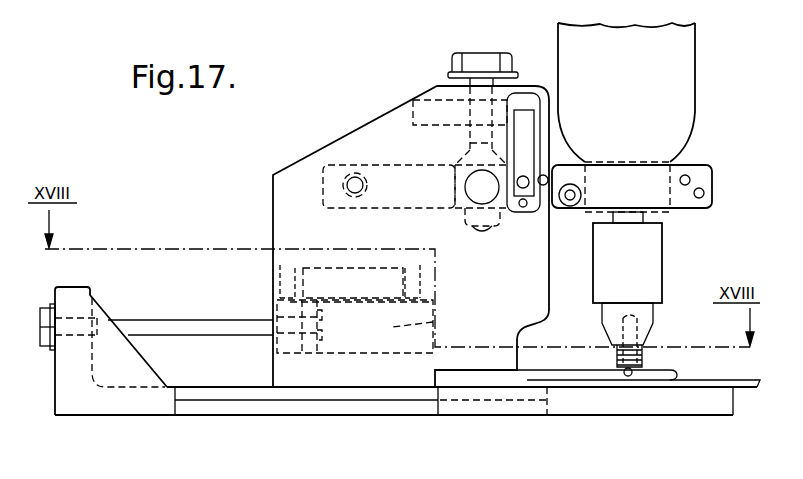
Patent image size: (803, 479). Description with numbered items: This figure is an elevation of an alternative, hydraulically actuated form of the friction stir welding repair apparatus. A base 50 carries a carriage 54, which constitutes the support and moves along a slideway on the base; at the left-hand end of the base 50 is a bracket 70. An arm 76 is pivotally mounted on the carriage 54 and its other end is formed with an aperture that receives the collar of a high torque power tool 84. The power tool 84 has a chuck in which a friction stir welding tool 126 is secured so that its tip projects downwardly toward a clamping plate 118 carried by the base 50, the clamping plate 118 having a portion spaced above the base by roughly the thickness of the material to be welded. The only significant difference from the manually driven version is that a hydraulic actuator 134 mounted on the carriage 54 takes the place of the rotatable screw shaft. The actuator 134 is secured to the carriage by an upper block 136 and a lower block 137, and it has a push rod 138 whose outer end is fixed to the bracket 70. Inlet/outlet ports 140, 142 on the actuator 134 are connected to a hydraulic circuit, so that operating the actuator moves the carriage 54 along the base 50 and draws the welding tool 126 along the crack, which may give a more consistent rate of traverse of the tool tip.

The base 50 is at (528, 412).
The carriage 54 is at (306, 146).
The bracket 70 is at (78, 290).
The arm 76 is at (703, 172).
The high torque power tool 84 is at (685, 93).
The clamping plate 118 is at (608, 382).
The friction stir welding tool 126 is at (645, 363).
The hydraulic actuator 134 is at (433, 322).
The upper block 136 is at (340, 266).
The lower block 137 is at (273, 378).
The push rod 138 is at (187, 322).
The inlet/outlet port 140 is at (287, 276).
The inlet/outlet port 142 is at (410, 262).